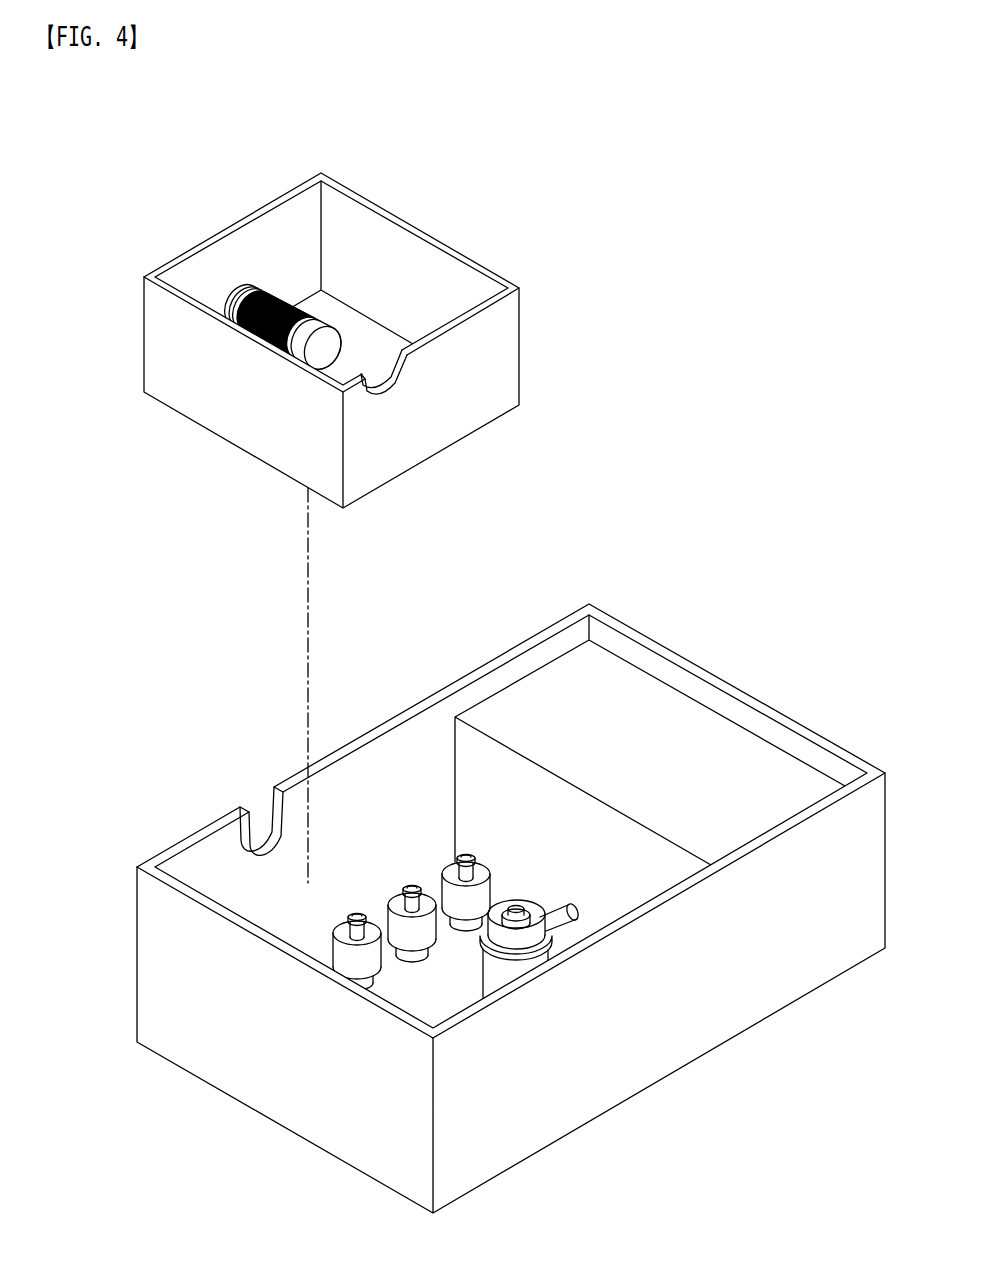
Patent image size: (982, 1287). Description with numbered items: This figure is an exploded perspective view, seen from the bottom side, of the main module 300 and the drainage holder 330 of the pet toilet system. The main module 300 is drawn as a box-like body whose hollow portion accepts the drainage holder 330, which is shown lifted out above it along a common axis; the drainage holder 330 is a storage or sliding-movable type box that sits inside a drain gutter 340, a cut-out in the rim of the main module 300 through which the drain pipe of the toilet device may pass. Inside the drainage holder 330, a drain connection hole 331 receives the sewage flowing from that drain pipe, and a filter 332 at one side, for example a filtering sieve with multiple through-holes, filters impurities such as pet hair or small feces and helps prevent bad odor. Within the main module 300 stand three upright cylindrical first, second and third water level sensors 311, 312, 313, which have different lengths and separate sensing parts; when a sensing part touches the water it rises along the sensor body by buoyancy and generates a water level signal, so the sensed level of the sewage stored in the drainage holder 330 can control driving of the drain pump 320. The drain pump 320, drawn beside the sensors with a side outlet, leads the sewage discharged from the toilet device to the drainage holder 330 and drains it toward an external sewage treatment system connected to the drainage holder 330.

The main module 300 is at (492, 910).
The first water level sensor 311 is at (412, 886).
The second water level sensor 312 is at (466, 855).
The third water level sensor 313 is at (357, 916).
The drain pump 320 is at (527, 943).
The drainage holder 330 is at (331, 311).
The drain connection hole 331 is at (247, 290).
The filter 332 is at (289, 297).
The drain gutter 340 is at (265, 818).